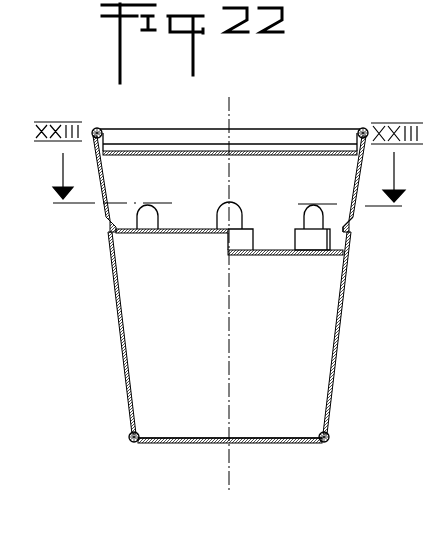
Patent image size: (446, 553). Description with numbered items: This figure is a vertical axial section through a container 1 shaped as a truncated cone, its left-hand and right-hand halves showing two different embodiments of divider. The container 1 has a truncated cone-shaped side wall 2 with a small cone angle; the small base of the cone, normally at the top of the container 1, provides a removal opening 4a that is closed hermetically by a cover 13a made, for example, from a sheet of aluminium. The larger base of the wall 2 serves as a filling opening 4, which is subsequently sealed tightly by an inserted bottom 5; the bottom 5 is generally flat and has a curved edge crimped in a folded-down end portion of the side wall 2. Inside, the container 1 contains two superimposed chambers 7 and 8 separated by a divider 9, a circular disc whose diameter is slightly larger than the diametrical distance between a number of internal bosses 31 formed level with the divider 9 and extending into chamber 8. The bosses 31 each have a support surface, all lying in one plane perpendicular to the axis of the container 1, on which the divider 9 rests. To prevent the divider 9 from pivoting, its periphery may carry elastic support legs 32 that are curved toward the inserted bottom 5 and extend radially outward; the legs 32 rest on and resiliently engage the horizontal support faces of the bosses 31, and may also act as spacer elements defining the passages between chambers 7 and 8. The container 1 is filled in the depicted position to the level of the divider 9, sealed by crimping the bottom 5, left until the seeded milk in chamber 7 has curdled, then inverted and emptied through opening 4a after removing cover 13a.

The container 1 is at (116, 363).
The side wall 2 is at (112, 283).
The filling opening 4 is at (299, 160).
The removal opening 4a is at (173, 433).
The inserted bottom 5 is at (256, 152).
The chamber 7 is at (283, 345).
The chamber 8 is at (289, 187).
The divider 9 is at (203, 233).
The cover 13a is at (203, 443).
The internal bosses 31 is at (149, 208).
The support legs 32 is at (352, 243).